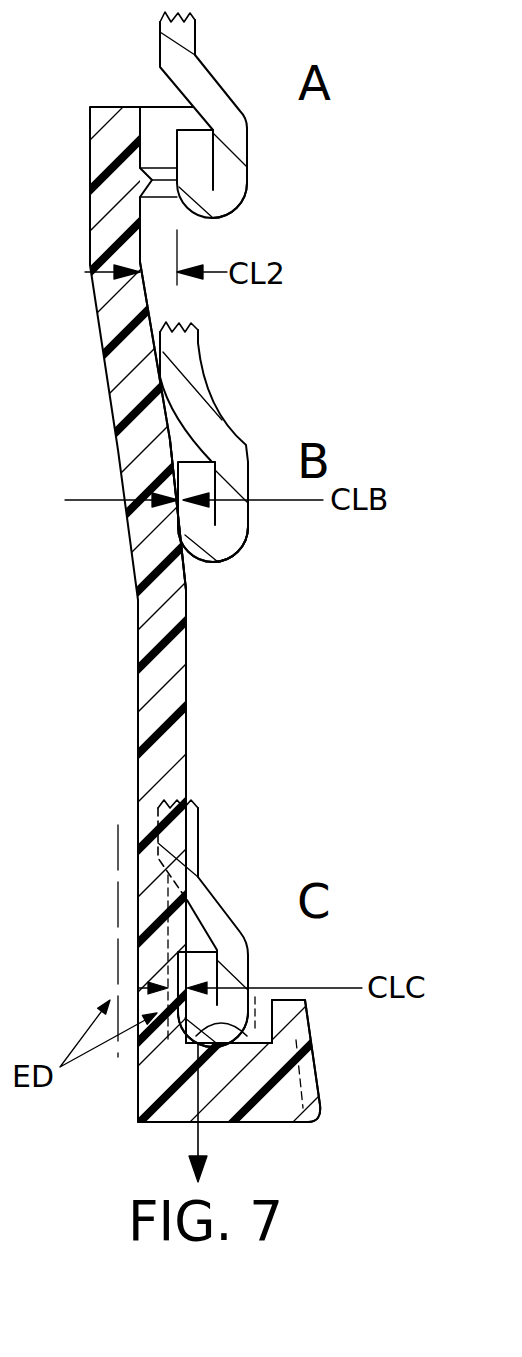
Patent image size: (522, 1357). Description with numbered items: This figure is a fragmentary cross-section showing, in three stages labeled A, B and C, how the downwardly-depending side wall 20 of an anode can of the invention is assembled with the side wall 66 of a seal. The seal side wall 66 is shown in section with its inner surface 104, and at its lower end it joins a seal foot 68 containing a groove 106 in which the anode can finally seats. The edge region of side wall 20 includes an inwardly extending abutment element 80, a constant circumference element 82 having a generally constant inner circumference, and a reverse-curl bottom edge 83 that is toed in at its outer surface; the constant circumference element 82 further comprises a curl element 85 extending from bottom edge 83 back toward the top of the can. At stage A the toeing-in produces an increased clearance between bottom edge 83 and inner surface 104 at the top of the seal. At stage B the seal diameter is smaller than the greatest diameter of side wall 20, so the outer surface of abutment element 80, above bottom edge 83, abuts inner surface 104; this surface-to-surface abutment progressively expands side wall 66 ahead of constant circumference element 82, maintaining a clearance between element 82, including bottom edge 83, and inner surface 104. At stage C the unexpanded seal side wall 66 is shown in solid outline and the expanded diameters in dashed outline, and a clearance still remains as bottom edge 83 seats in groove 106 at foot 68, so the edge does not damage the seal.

The side wall of the anode can 20 is at (210, 363).
The side wall of the seal 66 is at (120, 662).
The seal foot 68 is at (330, 1048).
The abutment element 80 is at (240, 442).
The constant circumference element 82 is at (249, 162).
The bottom edge 83 is at (217, 561).
The curl element 85 is at (168, 508).
The inner surface of side wall 104 is at (149, 309).
The groove 106 is at (191, 1022).